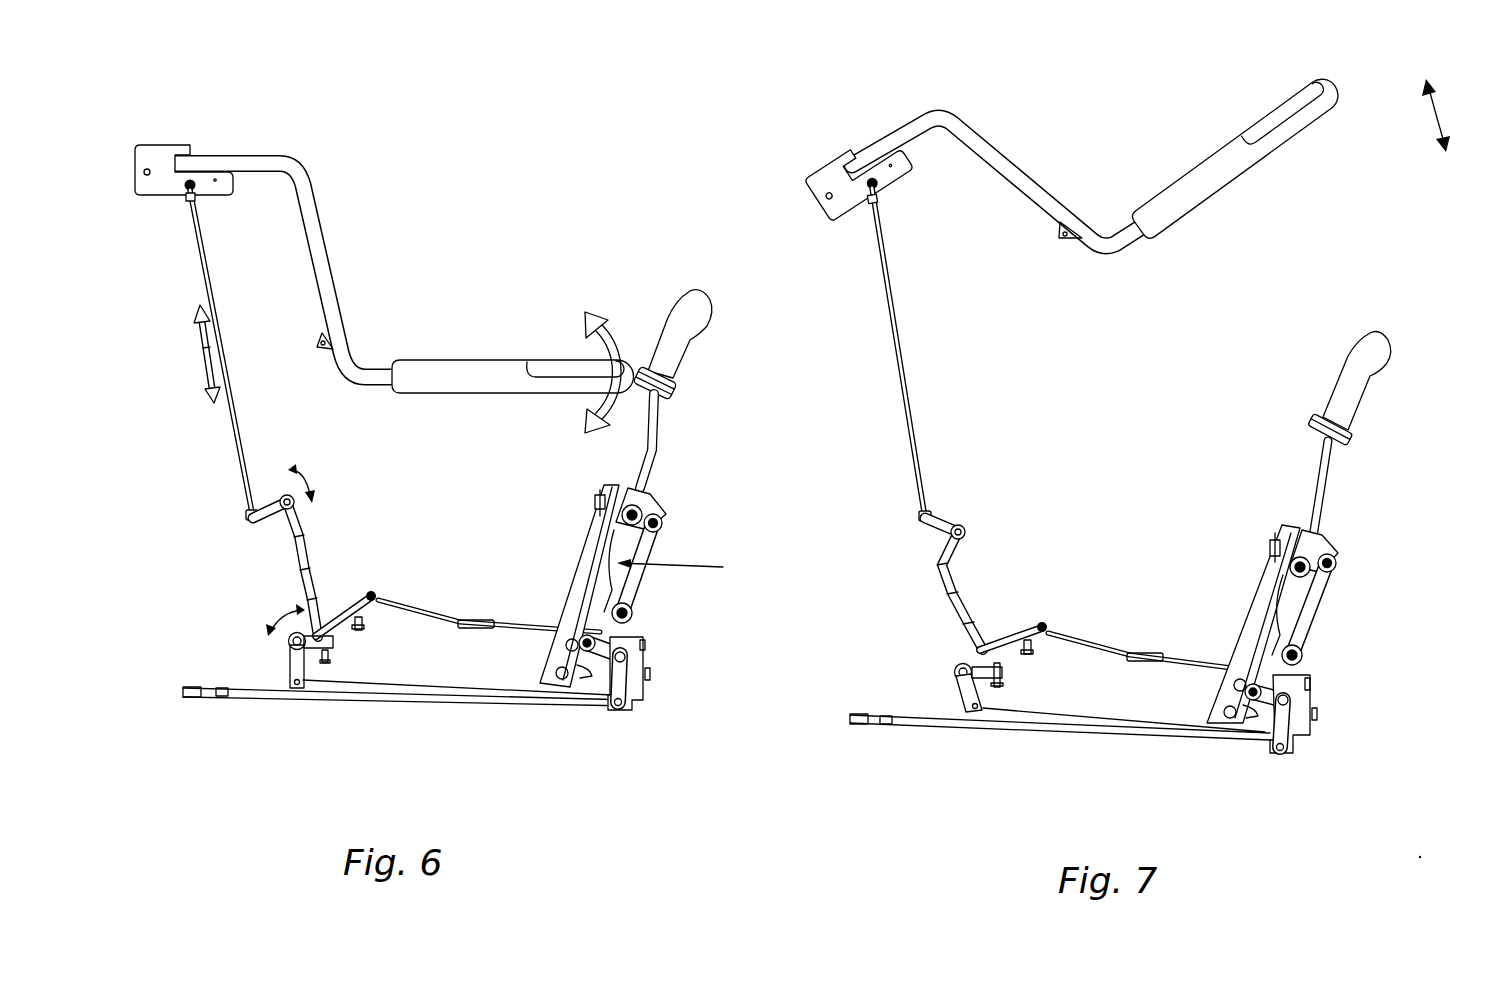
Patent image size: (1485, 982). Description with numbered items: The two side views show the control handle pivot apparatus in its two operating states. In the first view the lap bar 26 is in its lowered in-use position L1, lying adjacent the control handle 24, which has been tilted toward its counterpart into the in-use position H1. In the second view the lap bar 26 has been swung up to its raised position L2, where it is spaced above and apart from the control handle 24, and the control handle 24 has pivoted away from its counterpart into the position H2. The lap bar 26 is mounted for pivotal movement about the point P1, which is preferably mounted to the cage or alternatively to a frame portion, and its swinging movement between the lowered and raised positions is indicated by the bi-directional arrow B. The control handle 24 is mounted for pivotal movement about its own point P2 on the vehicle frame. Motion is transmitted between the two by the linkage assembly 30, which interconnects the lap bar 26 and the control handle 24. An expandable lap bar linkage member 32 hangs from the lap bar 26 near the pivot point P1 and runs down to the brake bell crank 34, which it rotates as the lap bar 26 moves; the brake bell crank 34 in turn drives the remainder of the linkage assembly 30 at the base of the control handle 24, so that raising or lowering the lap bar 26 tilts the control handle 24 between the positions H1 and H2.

In FIG. 6, the lap bar pivot point P1 is at (150, 170).
In FIG. 7, the lap bar pivot point P1 is at (822, 197).
In FIG. 6, the lap bar 26 is at (447, 364).
In FIG. 7, the lap bar 26 is at (1320, 120).
In FIG. 6, the lowered position L1 is at (420, 397).
In FIG. 7, the raised position L2 is at (1213, 155).
In FIG. 6, the bi-directional arrow B is at (606, 337).
In FIG. 7, the bi-directional arrow B is at (1450, 125).
In FIG. 6, the first control handle position H1 is at (693, 293).
In FIG. 7, the second control handle position H2 is at (1370, 332).
In FIG. 6, the control handle 24 is at (706, 330).
In FIG. 7, the control handle 24 is at (1388, 360).
In FIG. 6, the lap bar linkage member 32 is at (241, 417).
In FIG. 7, the lap bar linkage member 32 is at (909, 399).
In FIG. 6, the control handle pivot point P2 is at (597, 503).
In FIG. 7, the control handle pivot point P2 is at (1267, 542).
In FIG. 6, the linkage assembly 30 is at (680, 538).
In FIG. 7, the linkage assembly 30 is at (1367, 597).
In FIG. 6, the brake bell crank 34 is at (288, 647).
In FIG. 7, the brake bell crank 34 is at (953, 670).